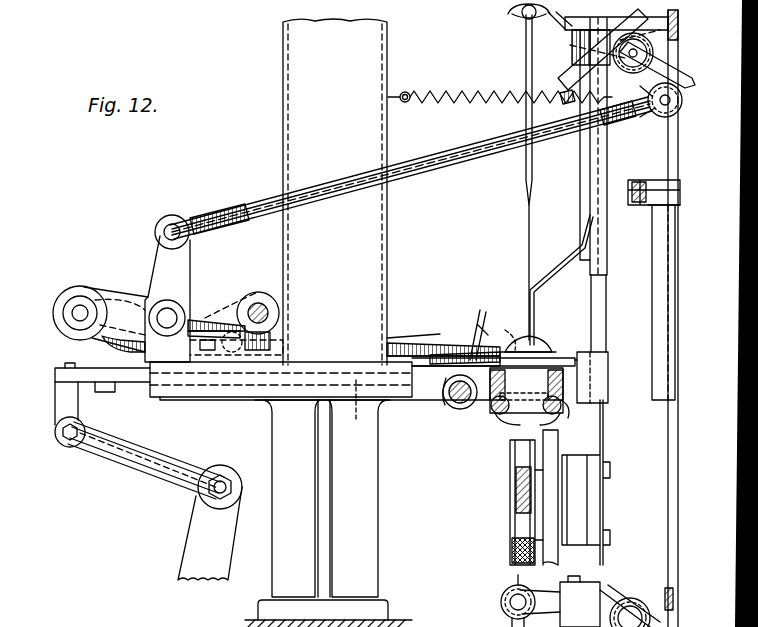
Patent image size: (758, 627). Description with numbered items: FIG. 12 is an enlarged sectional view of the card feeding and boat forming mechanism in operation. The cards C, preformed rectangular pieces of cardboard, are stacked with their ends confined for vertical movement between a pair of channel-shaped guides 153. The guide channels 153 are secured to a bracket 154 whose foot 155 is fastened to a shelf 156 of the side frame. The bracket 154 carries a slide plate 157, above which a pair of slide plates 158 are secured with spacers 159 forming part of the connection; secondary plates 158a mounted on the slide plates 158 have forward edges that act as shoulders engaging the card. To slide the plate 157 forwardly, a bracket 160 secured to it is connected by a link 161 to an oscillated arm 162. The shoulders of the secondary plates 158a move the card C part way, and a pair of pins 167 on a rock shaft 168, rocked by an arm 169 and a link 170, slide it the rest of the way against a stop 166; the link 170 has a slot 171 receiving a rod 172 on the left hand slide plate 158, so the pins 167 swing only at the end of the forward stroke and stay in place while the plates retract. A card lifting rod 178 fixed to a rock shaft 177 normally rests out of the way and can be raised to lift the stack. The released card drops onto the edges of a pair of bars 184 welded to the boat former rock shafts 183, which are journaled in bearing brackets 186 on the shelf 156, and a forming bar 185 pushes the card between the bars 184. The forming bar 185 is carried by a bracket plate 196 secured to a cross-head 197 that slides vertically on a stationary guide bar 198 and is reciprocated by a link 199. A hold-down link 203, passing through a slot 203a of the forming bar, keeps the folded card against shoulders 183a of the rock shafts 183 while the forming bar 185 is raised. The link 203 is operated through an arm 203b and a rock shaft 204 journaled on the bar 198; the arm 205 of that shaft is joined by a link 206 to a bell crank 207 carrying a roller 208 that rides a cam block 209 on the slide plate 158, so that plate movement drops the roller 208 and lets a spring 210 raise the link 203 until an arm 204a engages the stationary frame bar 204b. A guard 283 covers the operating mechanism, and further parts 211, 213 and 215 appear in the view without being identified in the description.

The channel-shaped guides 153 is at (378, 52).
The bracket 154 is at (238, 397).
The foot 155 is at (258, 606).
The shelf 156 is at (398, 620).
The slide plate 157 is at (135, 382).
The slide plates 158 is at (526, 390).
The secondary plates 158a is at (386, 338).
The spacers 159 is at (425, 343).
The bracket 160 is at (55, 405).
The link 161 is at (110, 462).
The arm 162 is at (196, 530).
The stop 166 is at (600, 352).
The pins 167 is at (481, 314).
The rock shaft 168 is at (448, 405).
The arm 169 is at (470, 405).
The link 170 is at (196, 320).
The slot 171 is at (205, 322).
The rod 172 is at (246, 302).
The rock shaft 177 is at (270, 306).
The card lifting rod 178 is at (356, 418).
The boat former rock shafts 183 is at (555, 417).
The shoulders 183a is at (575, 420).
The bars 184 is at (506, 407).
The forming bar 185 is at (538, 340).
The bearing brackets 186 is at (510, 500).
The bracket plate 196 is at (572, 258).
The cross-head 197 is at (609, 276).
The stationary guide bar 198 is at (606, 308).
The link 199 is at (660, 405).
The hold-down link 203 is at (526, 225).
The slot 203a is at (505, 330).
The arm 203b is at (508, 13).
The rock shaft 204 is at (575, 72).
The arm 204a is at (560, 97).
The stationary frame bar 204b is at (548, 18).
The arm 205 is at (660, 117).
The link 206 is at (480, 145).
The bell crank 207 is at (157, 258).
The roller 208 is at (78, 290).
The cam block 209 is at (224, 322).
The spring 210 is at (520, 90).
The guide 211 is at (562, 488).
The block 213 is at (512, 520).
The block 215 is at (505, 570).
The guard 283 is at (670, 590).
The cards C is at (556, 366).